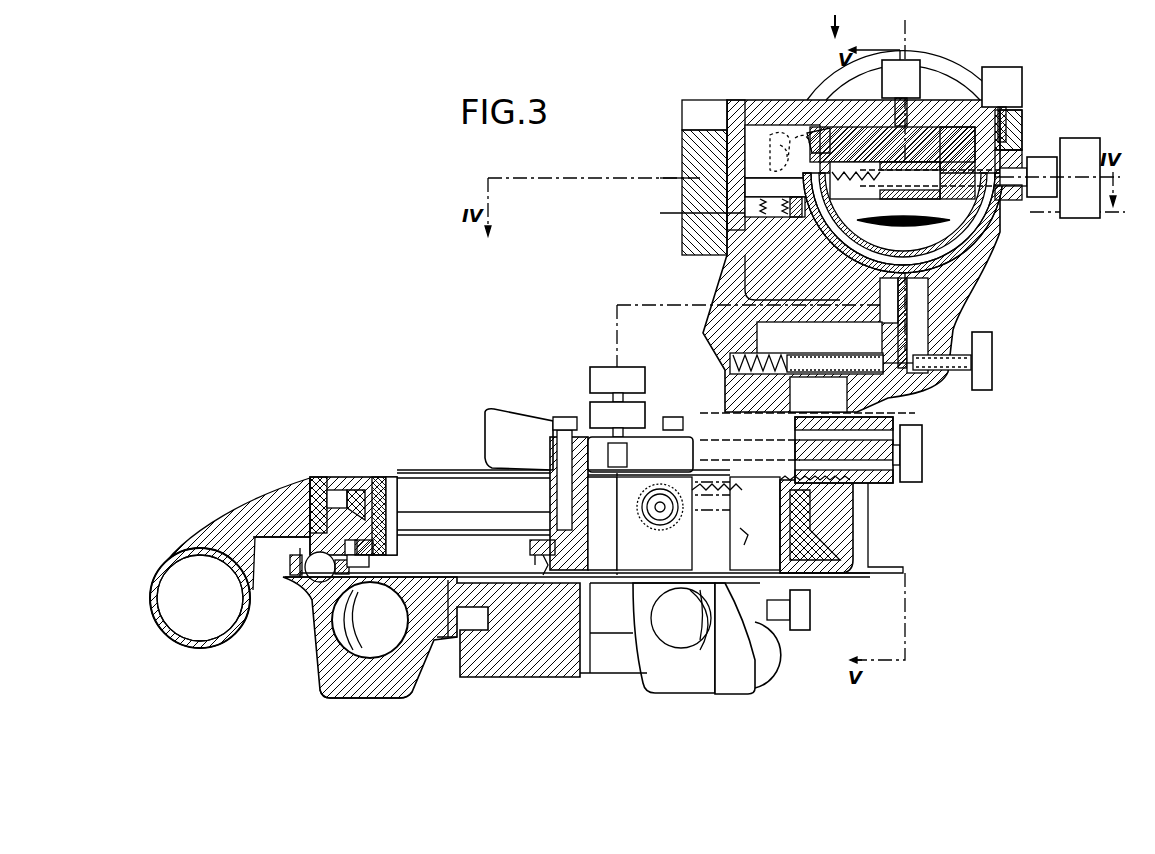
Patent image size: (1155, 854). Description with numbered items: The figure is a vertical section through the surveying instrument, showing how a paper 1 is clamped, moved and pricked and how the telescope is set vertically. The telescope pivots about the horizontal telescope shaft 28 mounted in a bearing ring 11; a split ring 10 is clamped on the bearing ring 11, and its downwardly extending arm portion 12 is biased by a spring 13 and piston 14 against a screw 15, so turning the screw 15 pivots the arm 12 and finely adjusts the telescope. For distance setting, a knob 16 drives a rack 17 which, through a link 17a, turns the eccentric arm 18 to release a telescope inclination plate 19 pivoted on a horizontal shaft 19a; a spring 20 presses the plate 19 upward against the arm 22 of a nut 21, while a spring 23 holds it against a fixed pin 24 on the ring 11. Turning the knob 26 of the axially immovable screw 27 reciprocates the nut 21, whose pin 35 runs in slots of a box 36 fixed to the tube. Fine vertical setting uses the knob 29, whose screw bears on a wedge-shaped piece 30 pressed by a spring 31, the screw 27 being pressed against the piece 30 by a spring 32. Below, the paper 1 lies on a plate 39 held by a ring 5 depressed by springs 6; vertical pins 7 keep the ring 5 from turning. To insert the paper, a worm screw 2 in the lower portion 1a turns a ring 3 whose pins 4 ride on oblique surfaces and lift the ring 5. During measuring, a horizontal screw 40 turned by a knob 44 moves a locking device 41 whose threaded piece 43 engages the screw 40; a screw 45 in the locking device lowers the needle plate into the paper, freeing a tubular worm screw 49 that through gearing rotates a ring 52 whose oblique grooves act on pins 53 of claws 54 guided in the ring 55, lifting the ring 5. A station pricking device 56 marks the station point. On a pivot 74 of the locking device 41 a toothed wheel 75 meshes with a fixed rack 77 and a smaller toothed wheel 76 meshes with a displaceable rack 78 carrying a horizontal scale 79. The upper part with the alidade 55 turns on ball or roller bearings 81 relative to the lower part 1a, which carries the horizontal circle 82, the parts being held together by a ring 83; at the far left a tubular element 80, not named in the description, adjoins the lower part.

The paper 1 is at (455, 580).
The lower portion 1a is at (305, 540).
The worm screw 2 is at (310, 580).
The ring 3 is at (338, 574).
The pins 4 is at (373, 620).
The ring 5 is at (360, 557).
The springs 6 is at (378, 547).
The vertical pins 7 is at (303, 565).
The split ring 10 is at (870, 322).
The bearing ring 11 is at (745, 283).
The arm portion 12 is at (900, 320).
The spring 13 is at (780, 372).
The piston 14 is at (825, 372).
The screw 15 is at (962, 368).
The knob 16 is at (838, 168).
The rack 17 is at (910, 70).
The link 17a is at (800, 130).
The eccentric arm 18 is at (782, 135).
The telescope inclination plate 19 is at (738, 210).
The horizontal shaft 19a is at (817, 128).
The spring 20 is at (782, 216).
The nut 21 is at (1010, 125).
The arm 22 is at (930, 145).
The spring 23 is at (765, 200).
The pin 24 is at (757, 160).
The knob 26 is at (1045, 165).
The screw 27 is at (1003, 222).
The horizontal telescope shaft 28 is at (860, 228).
The knob 29 is at (1008, 112).
The wedge-shaped piece 30 is at (1012, 150).
The spring 31 is at (1020, 190).
The spring 32 is at (1002, 104).
The pin 35 is at (1000, 258).
The box 36 is at (996, 240).
The plate 39 is at (448, 640).
The horizontal screw 40 is at (770, 452).
The locking device 41 is at (683, 448).
The threaded piece 43 is at (627, 457).
The knob 44 is at (915, 460).
The screw 45 is at (625, 388).
The worm screw 49 is at (625, 428).
The ring 52 is at (460, 506).
The pins 53 is at (400, 475).
The claws 54 is at (397, 496).
The ring 55 is at (380, 478).
The station pricking device 56 is at (530, 553).
The pivot 74 is at (607, 548).
The toothed wheel 75 is at (672, 518).
The toothed wheel 76 is at (660, 515).
The fixed rack 77 is at (772, 520).
The rack 78 is at (725, 515).
The horizontal scale 79 is at (858, 485).
The barrel 80 is at (262, 510).
The ball or roller bearings 81 is at (345, 488).
The horizontal circle 82 is at (330, 490).
The ring 83 is at (312, 490).